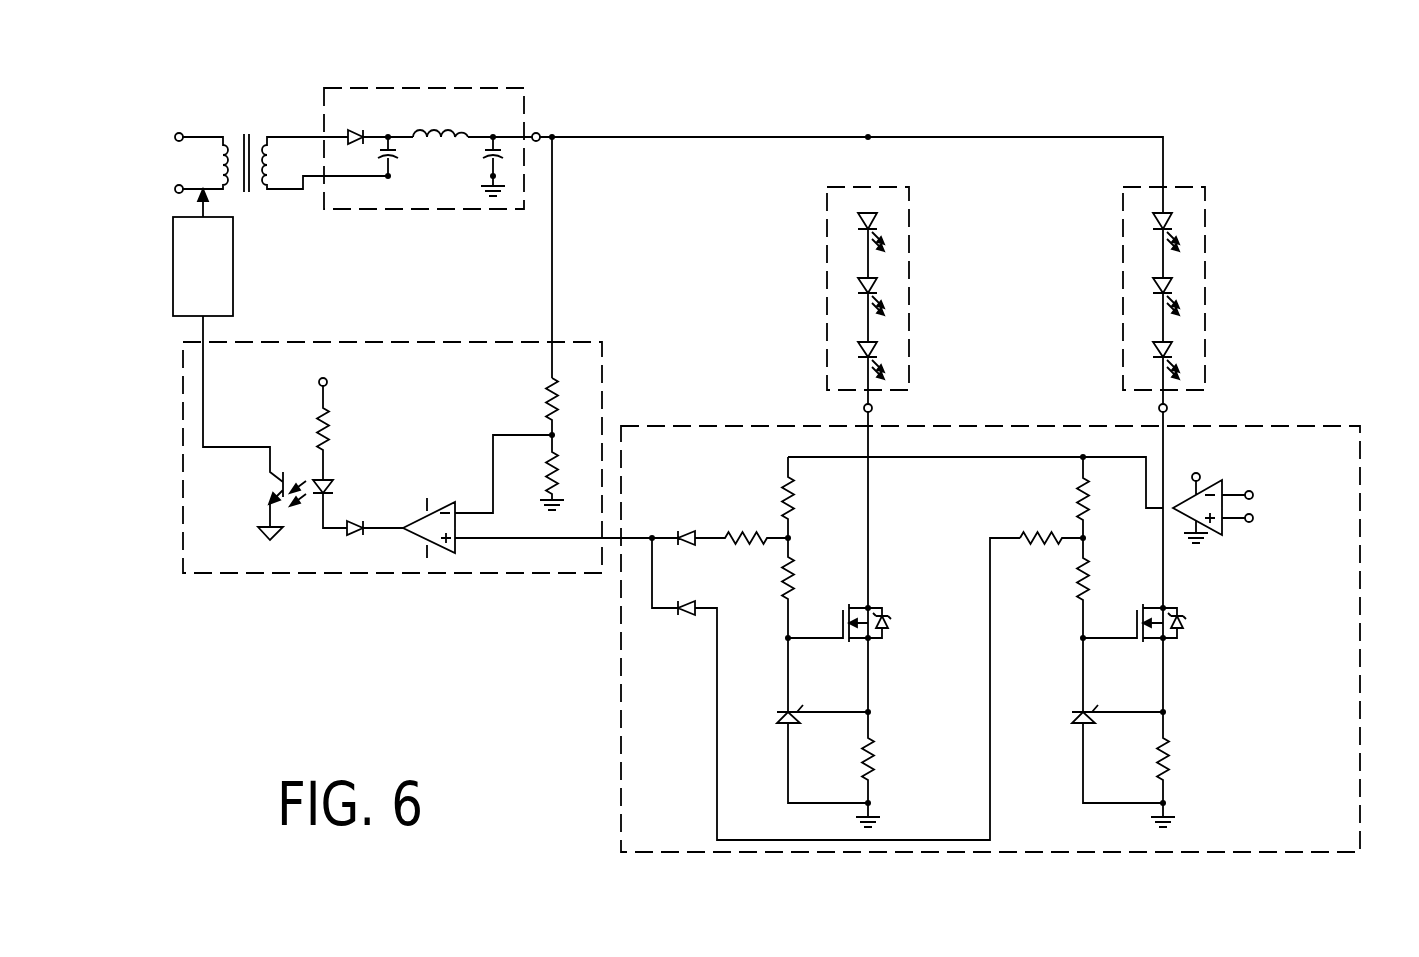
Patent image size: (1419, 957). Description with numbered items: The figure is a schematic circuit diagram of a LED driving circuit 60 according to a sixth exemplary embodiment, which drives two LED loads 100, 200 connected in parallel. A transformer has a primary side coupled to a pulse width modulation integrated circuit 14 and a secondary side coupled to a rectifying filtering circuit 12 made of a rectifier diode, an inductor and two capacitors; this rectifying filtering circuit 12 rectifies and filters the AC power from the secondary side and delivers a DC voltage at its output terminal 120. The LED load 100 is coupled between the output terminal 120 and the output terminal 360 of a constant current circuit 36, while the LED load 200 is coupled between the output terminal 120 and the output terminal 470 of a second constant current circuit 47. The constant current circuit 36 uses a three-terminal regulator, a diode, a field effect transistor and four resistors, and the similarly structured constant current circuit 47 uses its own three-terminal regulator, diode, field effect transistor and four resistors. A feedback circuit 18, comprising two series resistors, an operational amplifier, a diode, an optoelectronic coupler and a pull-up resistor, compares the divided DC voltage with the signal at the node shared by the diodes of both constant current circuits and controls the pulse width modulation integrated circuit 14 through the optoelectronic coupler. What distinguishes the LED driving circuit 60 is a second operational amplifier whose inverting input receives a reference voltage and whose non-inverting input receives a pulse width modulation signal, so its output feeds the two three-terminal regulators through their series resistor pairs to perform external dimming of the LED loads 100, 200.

The LED driving circuit 60 is at (862, 85).
The rectifying filtering circuit 12 is at (391, 210).
The pulse width modulation integrated circuit 14 is at (234, 252).
The feedback circuit 18 is at (454, 342).
The constant current circuit 36 is at (737, 484).
The constant current circuit 47 is at (1045, 486).
The LED load 100 is at (909, 308).
The LED load 200 is at (1205, 308).
The output terminal 120 is at (540, 132).
The output terminal 360 is at (873, 407).
The output terminal 470 is at (1168, 407).